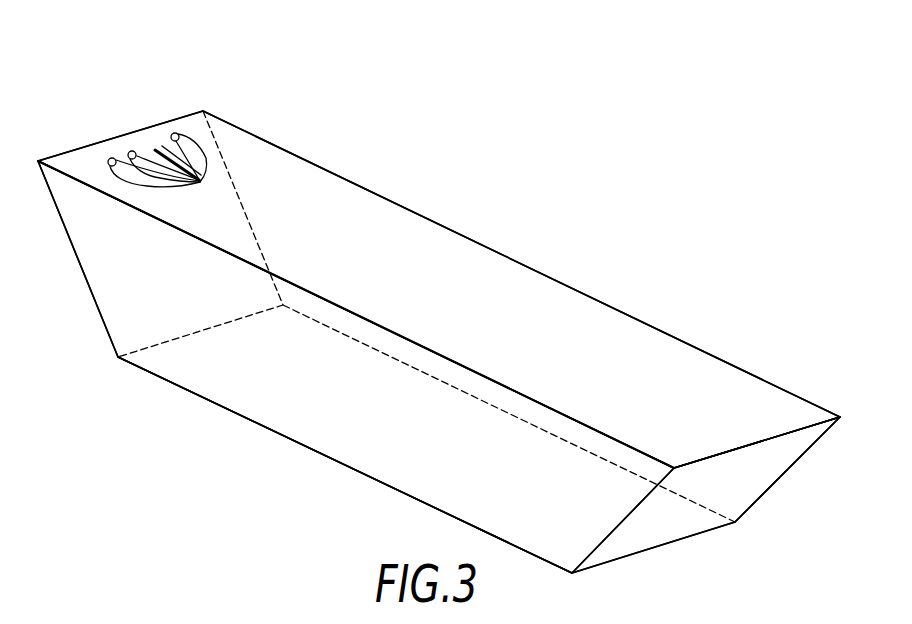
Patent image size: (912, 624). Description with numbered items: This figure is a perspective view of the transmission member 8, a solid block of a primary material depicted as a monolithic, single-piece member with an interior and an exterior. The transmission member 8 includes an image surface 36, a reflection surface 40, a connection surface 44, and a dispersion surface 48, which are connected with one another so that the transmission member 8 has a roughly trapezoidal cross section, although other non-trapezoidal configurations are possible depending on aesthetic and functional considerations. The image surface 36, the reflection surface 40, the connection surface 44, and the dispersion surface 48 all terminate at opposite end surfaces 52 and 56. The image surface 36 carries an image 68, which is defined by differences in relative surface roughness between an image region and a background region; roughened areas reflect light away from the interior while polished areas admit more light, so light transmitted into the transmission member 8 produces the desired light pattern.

The transmission member 8 is at (397, 199).
The image surface 36 is at (488, 275).
The reflection surface 40 is at (78, 257).
The connection surface 44 is at (252, 422).
The end surface 52 is at (380, 462).
The dispersion surface 48 is at (665, 533).
The end surface 56 is at (762, 392).
The image 68 is at (153, 148).